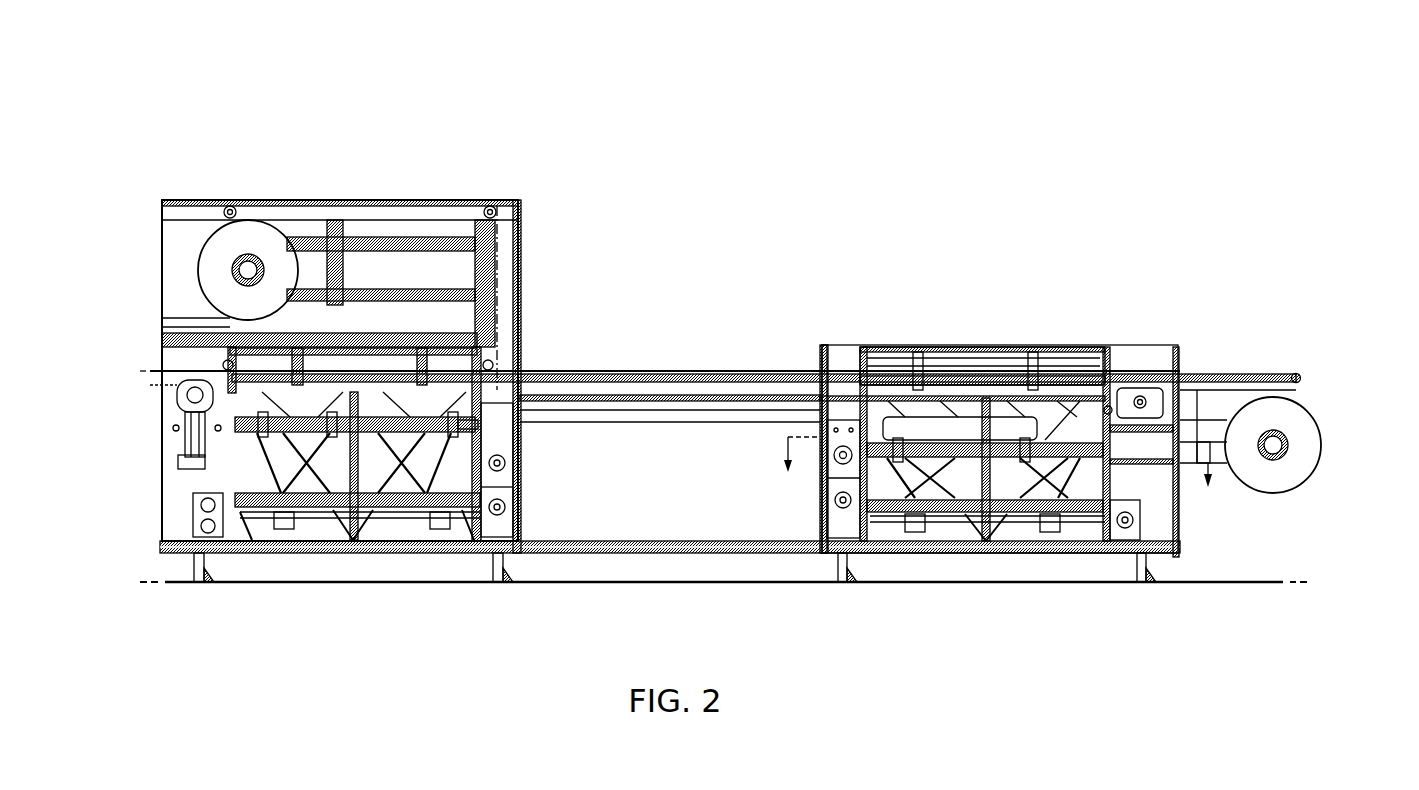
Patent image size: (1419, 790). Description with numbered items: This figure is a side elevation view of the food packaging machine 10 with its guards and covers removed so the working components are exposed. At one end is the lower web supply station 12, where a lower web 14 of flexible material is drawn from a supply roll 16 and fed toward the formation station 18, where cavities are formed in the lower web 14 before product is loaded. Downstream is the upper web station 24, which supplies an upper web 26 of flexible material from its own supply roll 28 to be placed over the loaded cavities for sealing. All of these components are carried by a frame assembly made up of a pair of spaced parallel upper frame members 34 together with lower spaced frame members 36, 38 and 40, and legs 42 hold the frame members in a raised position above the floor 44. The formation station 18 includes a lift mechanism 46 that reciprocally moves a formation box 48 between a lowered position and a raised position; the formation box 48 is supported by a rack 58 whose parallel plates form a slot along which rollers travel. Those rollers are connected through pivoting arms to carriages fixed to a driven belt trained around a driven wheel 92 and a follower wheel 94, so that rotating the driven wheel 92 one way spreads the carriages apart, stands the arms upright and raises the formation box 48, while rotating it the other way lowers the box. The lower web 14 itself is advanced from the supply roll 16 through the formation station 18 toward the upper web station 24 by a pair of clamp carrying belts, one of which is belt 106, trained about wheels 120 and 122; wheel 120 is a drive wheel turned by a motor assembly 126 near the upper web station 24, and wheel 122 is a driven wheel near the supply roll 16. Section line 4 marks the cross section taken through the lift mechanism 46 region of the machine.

The food packaging machine 10 is at (1003, 85).
The lower web supply station 12 is at (1333, 392).
The lower web 14 is at (1222, 380).
The supply roll 16 is at (1322, 443).
The formation station 18 is at (940, 325).
The upper web station 24 is at (408, 140).
The upper web 26 is at (498, 249).
The supply roll 28 is at (215, 250).
The upper frame members 34 is at (776, 372).
The lower frame member 36 is at (700, 408).
The lower frame member 38 is at (352, 578).
The lower frame member 40 is at (935, 550).
The legs 42 is at (208, 582).
The floor 44 is at (1243, 588).
The lift mechanism 46 is at (1045, 540).
The formation box 48 is at (1010, 420).
The rack 58 is at (875, 540).
The driven wheel 92 is at (822, 508).
The follower wheel 94 is at (1142, 522).
The belt 106 is at (640, 403).
The wheel 120 is at (175, 397).
The wheel 122 is at (1150, 386).
The motor assembly 126 is at (180, 447).
The section line 4- 4 is at (999, 479).